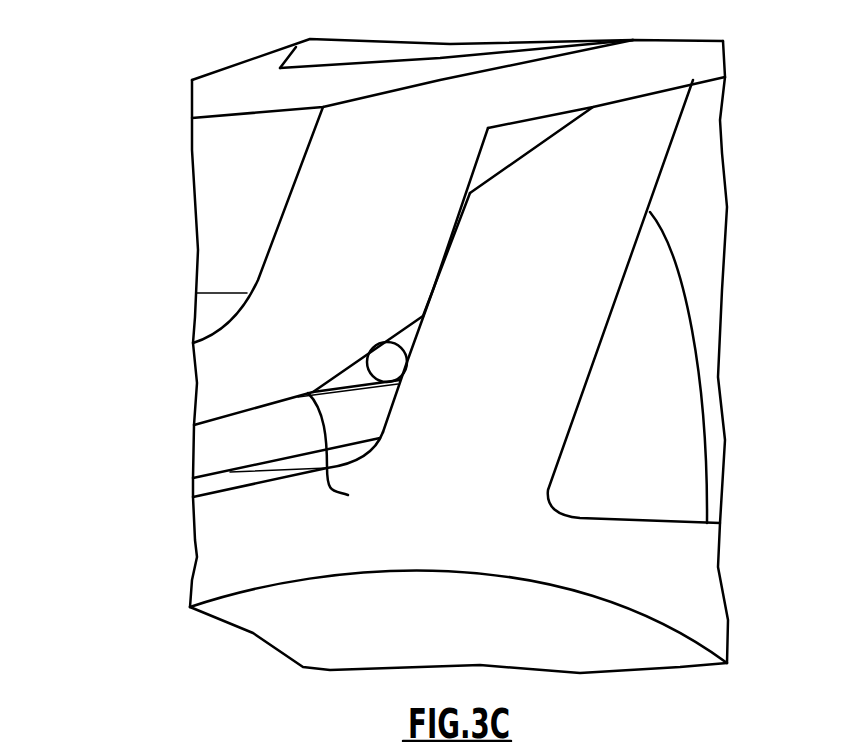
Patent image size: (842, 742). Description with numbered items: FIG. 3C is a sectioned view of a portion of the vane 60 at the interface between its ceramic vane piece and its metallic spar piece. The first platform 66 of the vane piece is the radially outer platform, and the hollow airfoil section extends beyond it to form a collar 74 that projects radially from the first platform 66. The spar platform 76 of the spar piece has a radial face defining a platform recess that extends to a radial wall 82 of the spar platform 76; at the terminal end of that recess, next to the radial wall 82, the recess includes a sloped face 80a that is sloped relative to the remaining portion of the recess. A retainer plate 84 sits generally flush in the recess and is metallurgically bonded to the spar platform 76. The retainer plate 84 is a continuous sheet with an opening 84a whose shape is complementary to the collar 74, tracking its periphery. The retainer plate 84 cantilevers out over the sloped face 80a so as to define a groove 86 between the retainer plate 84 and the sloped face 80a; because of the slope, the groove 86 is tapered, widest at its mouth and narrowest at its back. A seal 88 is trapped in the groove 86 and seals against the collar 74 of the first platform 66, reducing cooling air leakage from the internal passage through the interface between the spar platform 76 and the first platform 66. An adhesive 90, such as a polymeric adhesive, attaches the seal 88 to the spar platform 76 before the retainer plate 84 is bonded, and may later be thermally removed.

The vane 60 is at (132, 458).
The first platform 66 is at (217, 577).
The collar 74 is at (603, 233).
The spar platform 76 is at (208, 374).
The radial wall 82 is at (337, 200).
The retainer plate 84 is at (230, 450).
The opening 84a is at (397, 405).
The groove 86 is at (408, 333).
The seal 88 is at (393, 363).
The adhesive 90 is at (380, 340).
The sloped face 80a is at (349, 452).